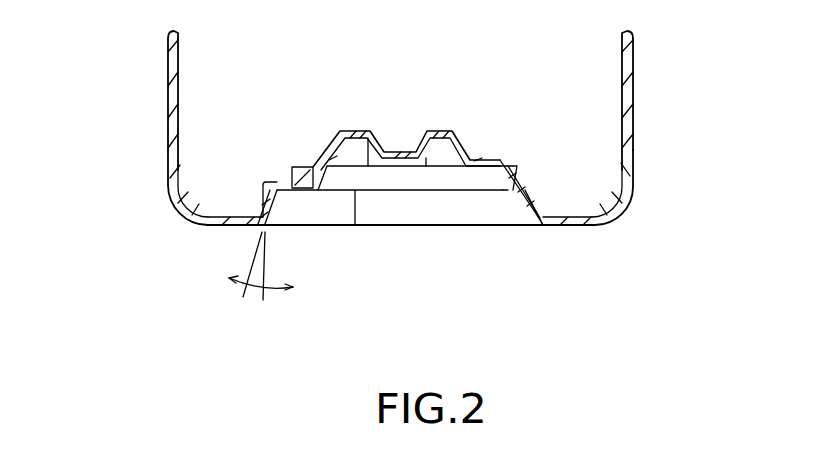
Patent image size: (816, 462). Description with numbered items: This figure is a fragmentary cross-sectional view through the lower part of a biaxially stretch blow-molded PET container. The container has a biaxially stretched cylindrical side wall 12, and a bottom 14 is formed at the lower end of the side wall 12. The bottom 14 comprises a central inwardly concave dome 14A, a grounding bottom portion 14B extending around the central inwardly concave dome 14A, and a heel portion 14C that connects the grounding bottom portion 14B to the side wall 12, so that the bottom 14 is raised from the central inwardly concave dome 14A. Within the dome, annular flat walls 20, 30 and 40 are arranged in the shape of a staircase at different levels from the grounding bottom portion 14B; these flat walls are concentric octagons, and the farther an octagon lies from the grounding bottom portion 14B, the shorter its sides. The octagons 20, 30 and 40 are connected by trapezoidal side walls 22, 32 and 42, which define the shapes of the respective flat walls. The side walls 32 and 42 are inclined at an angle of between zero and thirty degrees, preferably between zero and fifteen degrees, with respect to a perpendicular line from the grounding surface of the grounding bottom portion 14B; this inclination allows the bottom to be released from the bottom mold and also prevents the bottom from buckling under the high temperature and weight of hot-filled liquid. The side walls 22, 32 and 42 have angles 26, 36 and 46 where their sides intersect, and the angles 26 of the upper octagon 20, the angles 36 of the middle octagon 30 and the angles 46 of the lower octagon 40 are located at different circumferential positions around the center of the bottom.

The side wall 12 is at (168, 91).
The bottom 14 is at (392, 240).
The central inwardly concave dome 14A is at (357, 226).
The grounding bottom portion 14B is at (222, 226).
The heel portion 14C is at (165, 188).
The annular flat wall 20 is at (402, 154).
The side wall 22 is at (340, 152).
The angle 26 is at (343, 131).
The annular flat wall 30 is at (492, 156).
The side wall 32 is at (290, 163).
The angle 36 is at (297, 173).
The annular flat wall 40 is at (520, 178).
The side wall 42 is at (257, 203).
The angle 46 is at (341, 226).